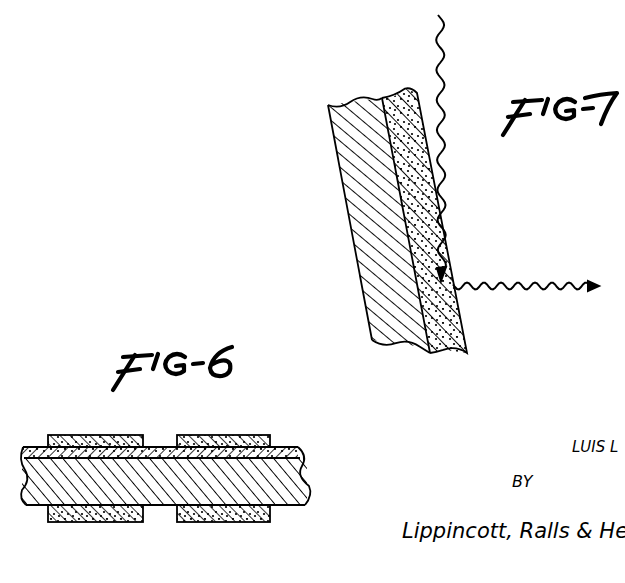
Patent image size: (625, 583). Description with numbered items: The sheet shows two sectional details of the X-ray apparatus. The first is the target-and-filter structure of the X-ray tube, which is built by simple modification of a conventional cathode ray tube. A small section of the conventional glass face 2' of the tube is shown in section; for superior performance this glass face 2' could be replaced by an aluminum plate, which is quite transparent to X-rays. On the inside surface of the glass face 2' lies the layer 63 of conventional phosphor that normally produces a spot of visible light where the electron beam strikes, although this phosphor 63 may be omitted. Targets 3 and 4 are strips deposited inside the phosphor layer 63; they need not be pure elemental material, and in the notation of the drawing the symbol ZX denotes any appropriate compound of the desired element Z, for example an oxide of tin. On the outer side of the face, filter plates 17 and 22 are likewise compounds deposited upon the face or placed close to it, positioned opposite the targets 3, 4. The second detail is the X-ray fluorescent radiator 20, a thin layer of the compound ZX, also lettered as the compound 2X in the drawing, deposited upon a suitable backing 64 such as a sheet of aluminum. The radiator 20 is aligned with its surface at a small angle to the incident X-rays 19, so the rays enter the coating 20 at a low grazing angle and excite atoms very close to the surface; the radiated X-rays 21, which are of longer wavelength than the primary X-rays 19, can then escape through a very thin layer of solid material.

In FIG. 7, the backing 64 is at (336, 157).
In FIG. 7, the X-ray fluorescent radiator 20 is at (458, 336).
In FIG. 7, the layer thickness dimension 2X is at (443, 352).
In FIG. 7, the incident X-rays 19 is at (444, 41).
In FIG. 7, the radiated X-rays 21 is at (536, 287).
In FIG. 6, the glass face 2' is at (181, 476).
In FIG. 6, the phosphor layer 63 is at (297, 451).
In FIG. 6, the target 4 is at (113, 441).
In FIG. 6, the target 3 is at (221, 418).
In FIG. 6, the filter plate 22 is at (110, 520).
In FIG. 6, the filter plate 17 is at (210, 521).
In FIG. 6, the compound of element Z ZX is at (78, 439).